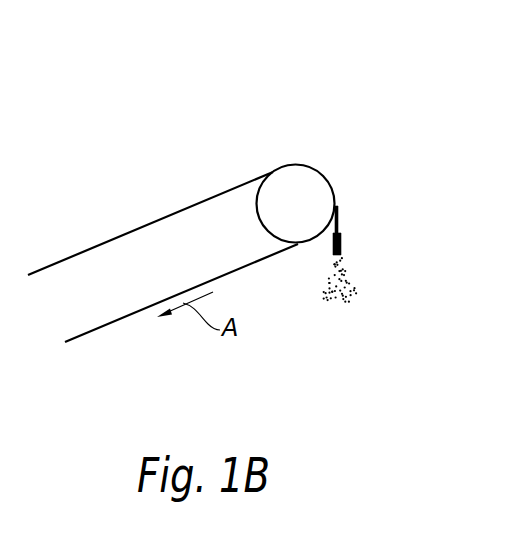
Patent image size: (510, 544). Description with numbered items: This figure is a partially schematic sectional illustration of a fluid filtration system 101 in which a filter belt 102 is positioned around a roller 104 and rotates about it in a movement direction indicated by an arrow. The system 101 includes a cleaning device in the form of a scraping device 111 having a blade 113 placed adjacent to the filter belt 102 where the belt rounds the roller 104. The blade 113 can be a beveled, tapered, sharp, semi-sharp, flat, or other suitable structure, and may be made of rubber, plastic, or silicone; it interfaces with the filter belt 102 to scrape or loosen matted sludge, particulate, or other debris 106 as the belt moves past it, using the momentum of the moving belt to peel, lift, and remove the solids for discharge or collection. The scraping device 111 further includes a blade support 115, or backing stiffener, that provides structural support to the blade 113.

The fluid filtration system 101 is at (323, 109).
The filter belt 102 is at (143, 226).
The roller 104 is at (283, 193).
The debris 106 is at (386, 285).
The scraping device 111 is at (350, 226).
The blade 113 is at (338, 211).
The blade support 115 is at (343, 253).